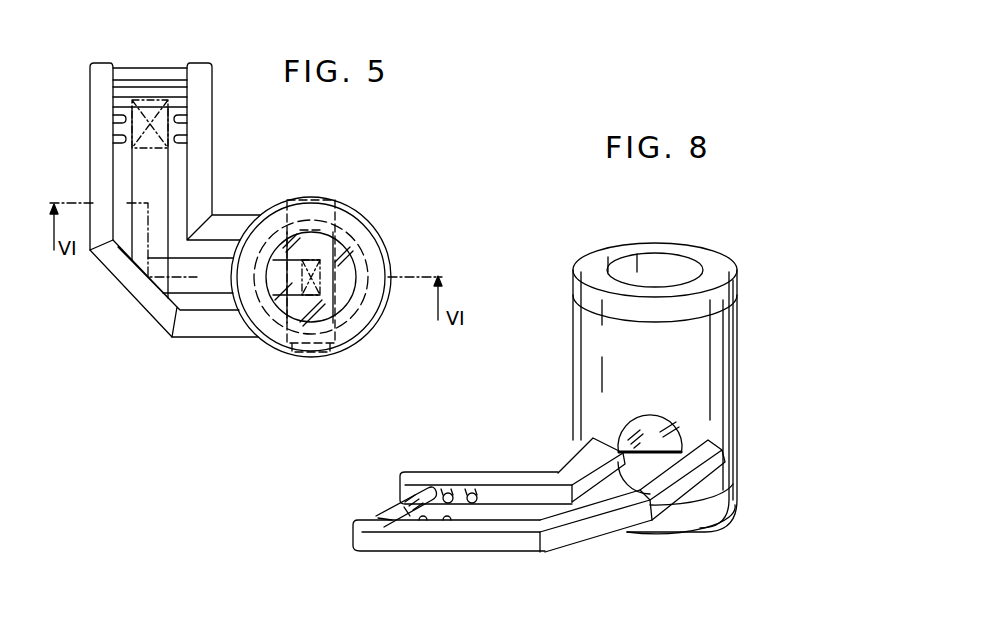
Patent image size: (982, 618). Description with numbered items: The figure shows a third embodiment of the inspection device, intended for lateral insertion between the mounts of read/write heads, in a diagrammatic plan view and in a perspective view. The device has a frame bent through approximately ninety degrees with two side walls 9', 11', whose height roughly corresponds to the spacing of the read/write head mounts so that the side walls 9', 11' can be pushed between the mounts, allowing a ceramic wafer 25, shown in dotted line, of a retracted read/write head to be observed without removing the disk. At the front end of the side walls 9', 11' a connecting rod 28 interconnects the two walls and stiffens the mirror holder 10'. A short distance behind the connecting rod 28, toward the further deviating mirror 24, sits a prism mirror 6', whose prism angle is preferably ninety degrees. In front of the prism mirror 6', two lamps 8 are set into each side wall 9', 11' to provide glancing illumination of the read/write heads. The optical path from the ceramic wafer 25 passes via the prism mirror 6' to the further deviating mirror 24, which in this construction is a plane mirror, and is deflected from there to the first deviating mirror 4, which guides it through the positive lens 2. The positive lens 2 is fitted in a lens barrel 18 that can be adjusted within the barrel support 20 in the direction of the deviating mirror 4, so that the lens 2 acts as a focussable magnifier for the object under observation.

In FIG. 5, the positive lens 2 is at (347, 273).
In FIG. 5, the deviating mirror 4 is at (320, 247).
In FIG. 8, the deviating mirror 4 is at (648, 430).
In FIG. 5, the prism mirror 6' is at (182, 90).
In FIG. 8, the prism mirror 6' is at (388, 547).
In FIG. 5, the lamps 8 is at (112, 138).
In FIG. 8, the lamps 8 is at (472, 492).
In FIG. 5, the side wall 9' is at (223, 151).
In FIG. 8, the side wall 9' is at (512, 462).
In FIG. 5, the mirror holder 10' is at (308, 298).
In FIG. 8, the mirror holder 10' is at (626, 388).
In FIG. 5, the side wall 11' is at (154, 192).
In FIG. 8, the side wall 11' is at (502, 541).
In FIG. 8, the lens barrel 18 is at (662, 252).
In FIG. 8, the barrel support 20 is at (725, 355).
In FIG. 5, the further deviating mirror 24 is at (143, 272).
In FIG. 8, the further deviating mirror 24 is at (565, 508).
In FIG. 5, the ceramic wafer 25 is at (148, 147).
In FIG. 5, the connecting rod 28 is at (162, 73).
In FIG. 8, the connecting rod 28 is at (392, 509).